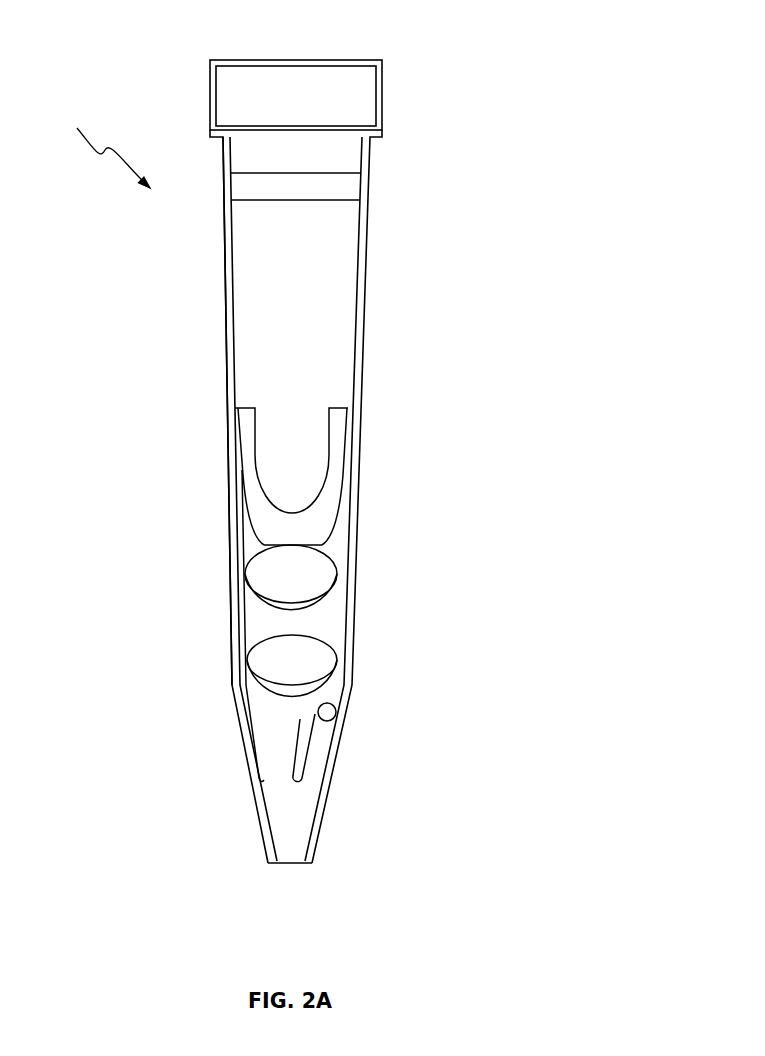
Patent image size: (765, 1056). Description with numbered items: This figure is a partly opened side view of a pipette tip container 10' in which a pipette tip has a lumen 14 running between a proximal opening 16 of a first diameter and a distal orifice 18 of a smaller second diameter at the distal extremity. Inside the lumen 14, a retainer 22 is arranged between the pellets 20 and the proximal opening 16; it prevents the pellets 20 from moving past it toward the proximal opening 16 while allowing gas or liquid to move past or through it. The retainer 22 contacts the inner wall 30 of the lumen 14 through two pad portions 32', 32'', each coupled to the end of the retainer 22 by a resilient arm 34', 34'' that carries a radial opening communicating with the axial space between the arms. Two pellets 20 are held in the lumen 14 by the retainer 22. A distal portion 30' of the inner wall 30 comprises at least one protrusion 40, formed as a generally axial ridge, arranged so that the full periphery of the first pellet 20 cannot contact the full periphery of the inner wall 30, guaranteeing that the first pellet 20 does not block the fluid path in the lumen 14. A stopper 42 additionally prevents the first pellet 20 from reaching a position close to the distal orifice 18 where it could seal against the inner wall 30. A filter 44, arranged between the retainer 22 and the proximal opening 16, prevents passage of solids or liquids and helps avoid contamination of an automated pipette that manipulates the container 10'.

The pipette tip container 10' is at (105, 143).
The proximal opening 16 is at (333, 60).
The filter 44 is at (348, 185).
The lumen 14 is at (310, 283).
The inner wall 30 is at (172, 411).
The pad portion 32' is at (199, 423).
The pad portion 32'' is at (384, 425).
The resilient arm 34' is at (198, 476).
The resilient arm 34'' is at (384, 476).
The retainer 22 is at (320, 517).
The distal portion of the inner wall 30' is at (193, 626).
The pellet 20 is at (320, 680).
The protrusion 40 is at (300, 738).
The stopper 42 is at (335, 716).
The distal orifice 18 is at (292, 864).